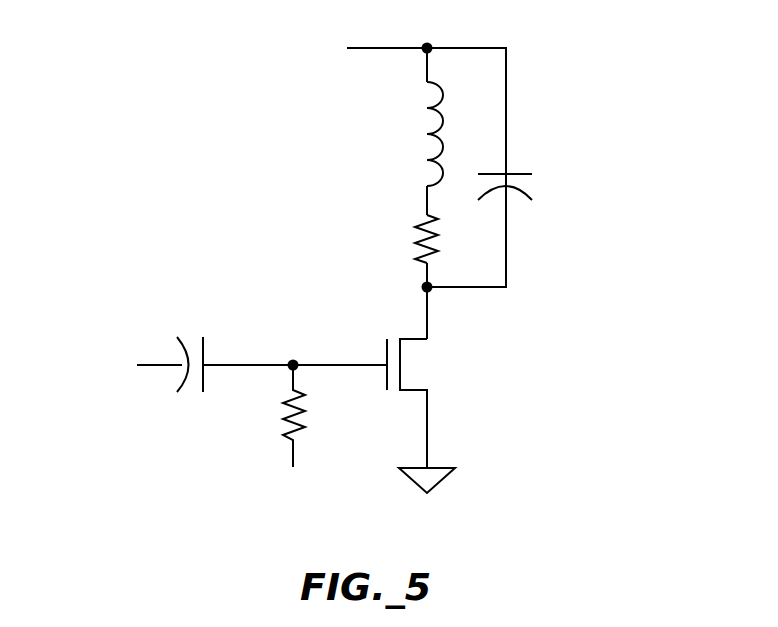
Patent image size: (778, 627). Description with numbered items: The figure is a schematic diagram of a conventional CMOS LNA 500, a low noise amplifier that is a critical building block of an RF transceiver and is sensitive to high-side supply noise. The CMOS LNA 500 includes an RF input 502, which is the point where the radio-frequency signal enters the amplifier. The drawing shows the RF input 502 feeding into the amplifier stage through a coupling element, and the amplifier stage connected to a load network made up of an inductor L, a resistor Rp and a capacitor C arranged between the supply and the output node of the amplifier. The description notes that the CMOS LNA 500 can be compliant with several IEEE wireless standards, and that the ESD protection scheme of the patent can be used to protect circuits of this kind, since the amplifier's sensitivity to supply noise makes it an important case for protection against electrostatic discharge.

The CMOS LNA 500 is at (636, 163).
The RF input 502 is at (115, 291).
The inductor L is at (418, 134).
The parallel resistor Rp is at (403, 239).
The capacitor C is at (524, 188).